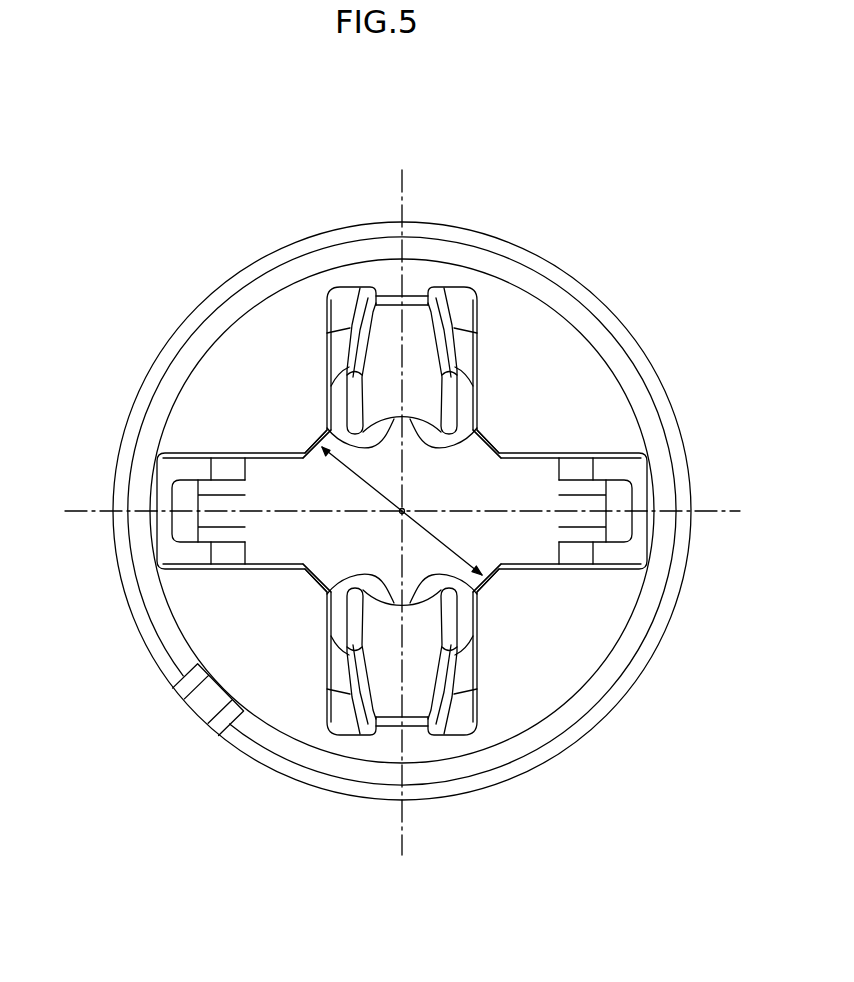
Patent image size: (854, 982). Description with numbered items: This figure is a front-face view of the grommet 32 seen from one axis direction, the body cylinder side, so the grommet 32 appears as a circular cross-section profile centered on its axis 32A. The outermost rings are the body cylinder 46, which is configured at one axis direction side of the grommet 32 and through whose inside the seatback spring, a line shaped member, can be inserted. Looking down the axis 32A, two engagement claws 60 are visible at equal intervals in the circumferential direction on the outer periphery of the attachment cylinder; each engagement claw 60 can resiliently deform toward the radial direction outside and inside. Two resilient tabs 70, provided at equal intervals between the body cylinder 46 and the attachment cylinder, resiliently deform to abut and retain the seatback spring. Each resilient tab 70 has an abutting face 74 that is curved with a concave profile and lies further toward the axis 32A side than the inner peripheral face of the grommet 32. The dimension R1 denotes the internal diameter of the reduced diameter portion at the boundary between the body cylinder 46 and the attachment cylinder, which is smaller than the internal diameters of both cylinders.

The grommet 32 is at (404, 498).
The axis 32A is at (407, 508).
The body cylinder 46 is at (605, 719).
The engagement claw 60 is at (170, 494).
The resilient tab 70 is at (458, 407).
The abutting face 74 is at (324, 428).
The internal diameter of the reduced diameter portion R1 is at (433, 525).